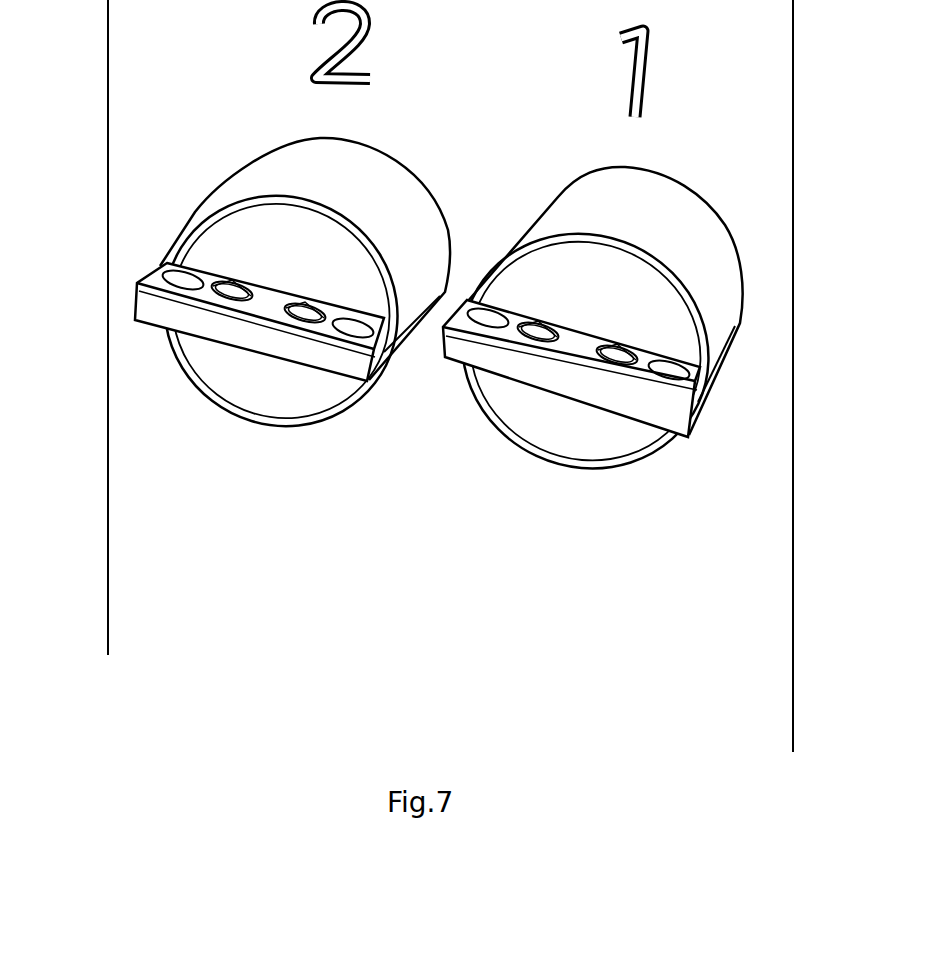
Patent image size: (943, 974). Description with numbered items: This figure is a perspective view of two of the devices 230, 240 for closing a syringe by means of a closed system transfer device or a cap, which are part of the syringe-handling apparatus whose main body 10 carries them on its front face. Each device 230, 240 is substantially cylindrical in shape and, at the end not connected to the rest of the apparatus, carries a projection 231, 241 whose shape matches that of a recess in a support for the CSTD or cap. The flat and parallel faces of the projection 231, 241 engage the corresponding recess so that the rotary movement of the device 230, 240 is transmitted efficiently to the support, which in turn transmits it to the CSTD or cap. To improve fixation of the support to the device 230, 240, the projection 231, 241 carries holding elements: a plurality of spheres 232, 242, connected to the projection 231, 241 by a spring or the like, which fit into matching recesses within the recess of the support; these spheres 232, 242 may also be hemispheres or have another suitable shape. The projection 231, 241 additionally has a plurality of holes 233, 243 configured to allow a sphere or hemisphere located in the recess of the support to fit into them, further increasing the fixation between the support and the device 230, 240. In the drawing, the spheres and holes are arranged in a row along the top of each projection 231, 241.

The main body 10 is at (300, 595).
The device for closing the syringe 230 is at (267, 175).
The projection 231 is at (230, 338).
The spheres 232 is at (232, 280).
The holes 233 is at (157, 268).
The device for closing the syringe 240 is at (627, 203).
The projection 241 is at (532, 370).
The spheres 242 is at (622, 342).
The holes 243 is at (673, 362).